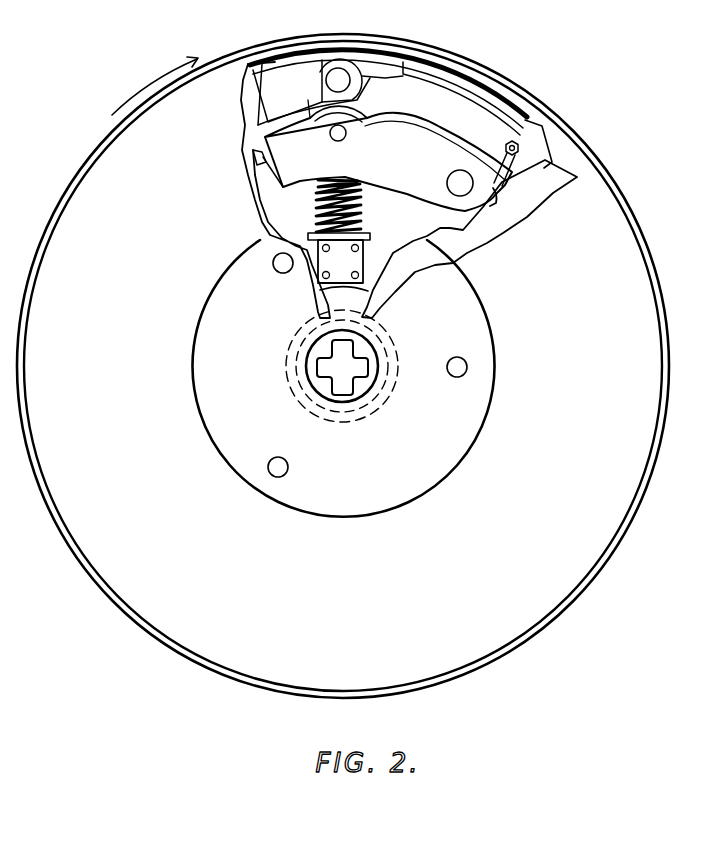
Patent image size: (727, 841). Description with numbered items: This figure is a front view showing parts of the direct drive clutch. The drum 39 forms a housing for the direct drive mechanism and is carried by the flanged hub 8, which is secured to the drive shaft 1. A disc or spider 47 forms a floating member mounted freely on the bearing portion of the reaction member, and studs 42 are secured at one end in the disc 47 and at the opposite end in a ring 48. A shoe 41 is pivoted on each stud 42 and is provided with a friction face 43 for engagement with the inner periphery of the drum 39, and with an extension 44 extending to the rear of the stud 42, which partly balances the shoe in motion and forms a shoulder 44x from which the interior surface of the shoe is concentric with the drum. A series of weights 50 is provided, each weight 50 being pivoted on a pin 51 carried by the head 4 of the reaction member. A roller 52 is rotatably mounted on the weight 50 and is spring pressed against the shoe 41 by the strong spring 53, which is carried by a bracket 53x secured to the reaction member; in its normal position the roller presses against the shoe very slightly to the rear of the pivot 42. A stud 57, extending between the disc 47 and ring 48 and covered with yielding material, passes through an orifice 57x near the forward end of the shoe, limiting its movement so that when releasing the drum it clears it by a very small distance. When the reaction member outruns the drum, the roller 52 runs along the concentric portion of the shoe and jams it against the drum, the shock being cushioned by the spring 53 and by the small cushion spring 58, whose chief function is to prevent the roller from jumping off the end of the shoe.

The drum 39 is at (343, 366).
The flanged hub 8 is at (227, 405).
The drive shaft 1 is at (335, 377).
The friction face 43 is at (489, 100).
The shoe 41 is at (438, 102).
The disc or spider 47 is at (278, 78).
The stud 42 is at (342, 78).
The extension 44 is at (298, 110).
The shoulder 44x is at (315, 115).
The roller 52 is at (347, 112).
The weight 50 is at (400, 167).
The pin 51 is at (446, 182).
The stud 57 is at (525, 153).
The orifice 57x is at (503, 151).
The ring 48 is at (535, 137).
The head 4 is at (500, 183).
The cushion spring 58 is at (262, 162).
The spring 53 is at (318, 213).
The bracket 53x is at (333, 247).